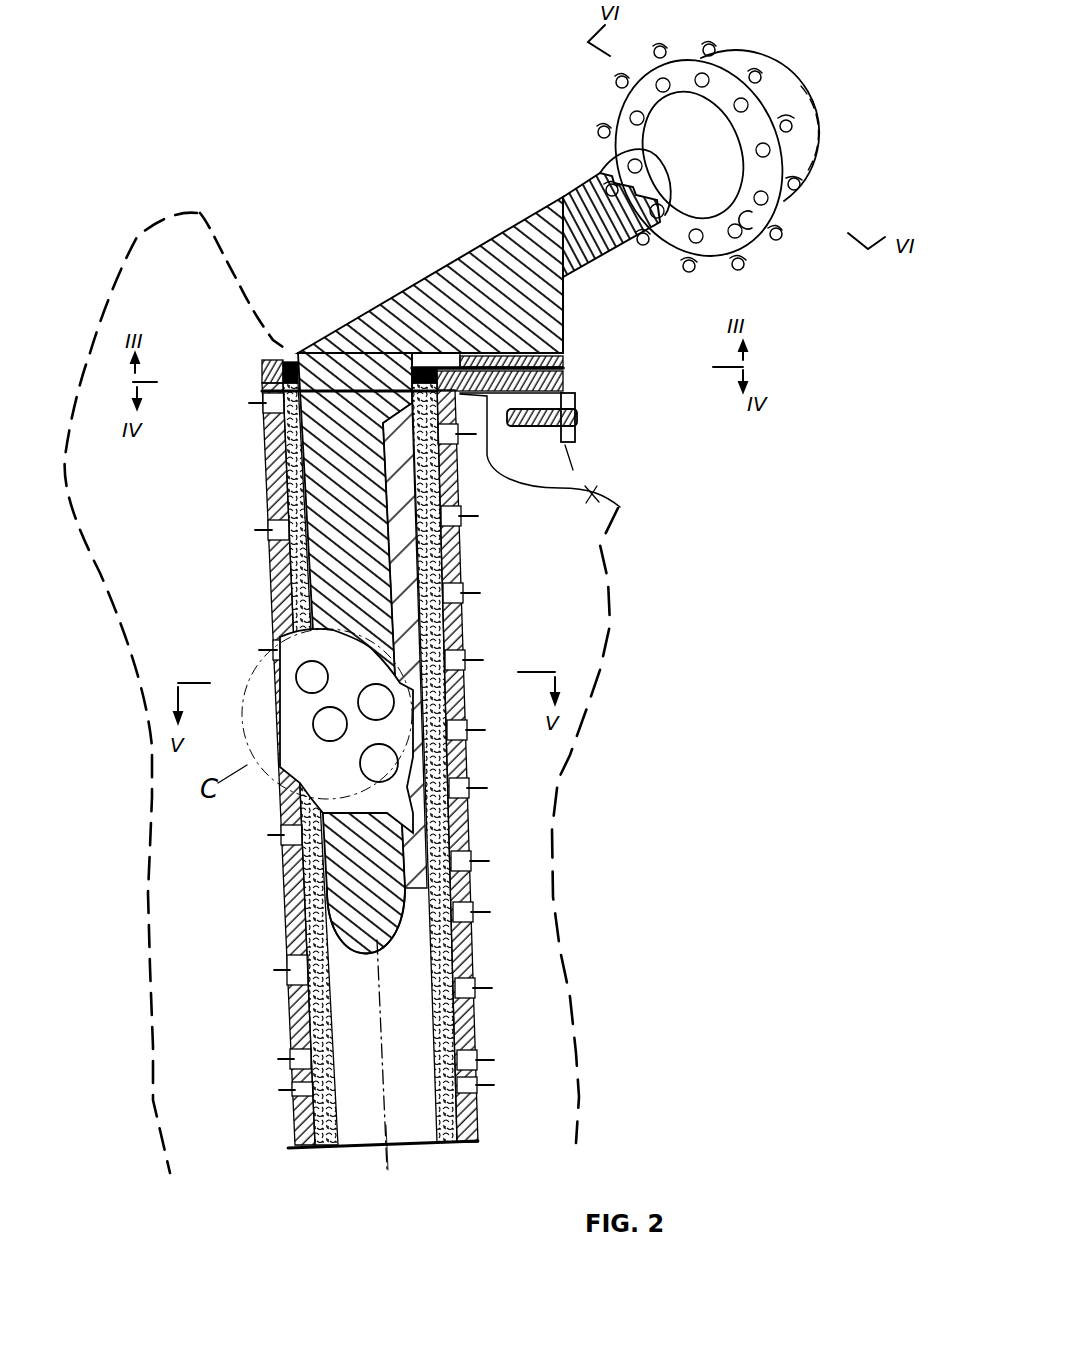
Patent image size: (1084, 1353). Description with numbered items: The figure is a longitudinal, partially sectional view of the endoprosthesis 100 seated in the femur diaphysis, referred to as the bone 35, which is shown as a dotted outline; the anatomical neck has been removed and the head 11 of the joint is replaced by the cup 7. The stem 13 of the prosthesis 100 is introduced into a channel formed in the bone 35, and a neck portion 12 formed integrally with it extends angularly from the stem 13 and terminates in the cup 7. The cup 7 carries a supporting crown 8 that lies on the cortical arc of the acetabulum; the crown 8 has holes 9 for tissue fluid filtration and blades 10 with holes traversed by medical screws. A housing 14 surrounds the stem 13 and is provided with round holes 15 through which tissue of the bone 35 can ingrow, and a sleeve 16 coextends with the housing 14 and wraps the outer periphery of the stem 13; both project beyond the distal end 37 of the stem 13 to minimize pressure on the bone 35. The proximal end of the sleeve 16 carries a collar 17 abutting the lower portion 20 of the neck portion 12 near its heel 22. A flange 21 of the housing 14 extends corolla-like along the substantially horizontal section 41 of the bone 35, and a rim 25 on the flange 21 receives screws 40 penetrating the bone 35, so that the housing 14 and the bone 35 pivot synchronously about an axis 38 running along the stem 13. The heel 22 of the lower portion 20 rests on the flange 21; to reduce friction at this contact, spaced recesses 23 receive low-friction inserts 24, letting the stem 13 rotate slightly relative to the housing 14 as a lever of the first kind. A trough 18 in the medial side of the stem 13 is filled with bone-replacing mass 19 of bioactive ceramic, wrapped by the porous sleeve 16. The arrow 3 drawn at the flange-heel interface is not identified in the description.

The interface between implant body and sleeve 3 is at (565, 372).
The cup 7 is at (797, 95).
The supporting crown 8 is at (760, 163).
The holes 9 is at (748, 220).
The blades 10 is at (605, 113).
The head 11 is at (683, 138).
The neck portion 12 is at (557, 236).
The stem 13 is at (353, 557).
The housing 14 is at (287, 440).
The holes 15 is at (312, 677).
The sleeve 16 is at (293, 843).
The collar 17 is at (430, 380).
The trough 18 is at (460, 586).
The bone-replacing mass 19 is at (410, 640).
The lower portion 20 is at (530, 302).
The flange 21 is at (572, 395).
The heel 22 is at (423, 370).
The recesses 23 is at (462, 353).
The insert 24 is at (566, 352).
The rim 25 is at (574, 433).
The bone 35 is at (527, 940).
The distal end 37 is at (397, 918).
The axis 38 is at (412, 1153).
The screws 40 is at (577, 428).
The horizontal section 41 is at (597, 496).
The prosthesis 100 is at (400, 201).